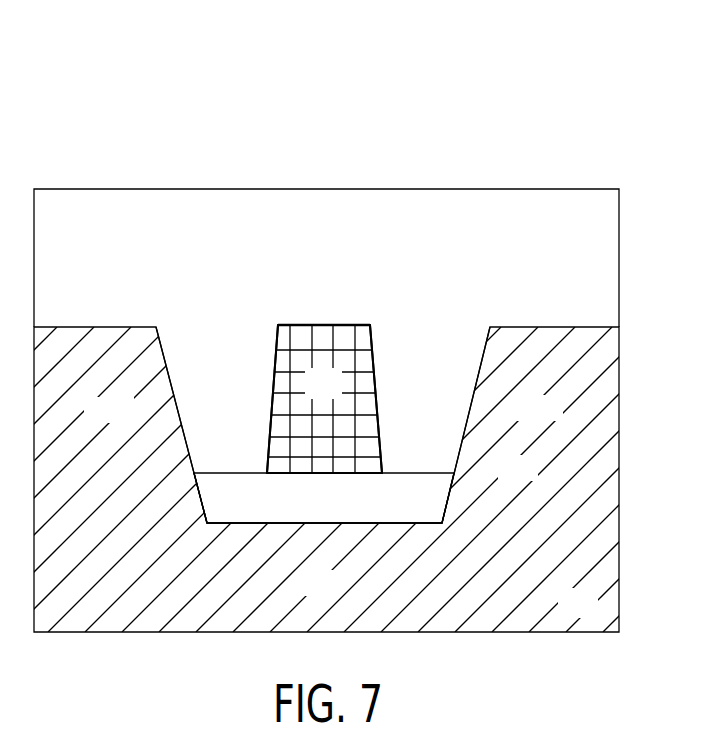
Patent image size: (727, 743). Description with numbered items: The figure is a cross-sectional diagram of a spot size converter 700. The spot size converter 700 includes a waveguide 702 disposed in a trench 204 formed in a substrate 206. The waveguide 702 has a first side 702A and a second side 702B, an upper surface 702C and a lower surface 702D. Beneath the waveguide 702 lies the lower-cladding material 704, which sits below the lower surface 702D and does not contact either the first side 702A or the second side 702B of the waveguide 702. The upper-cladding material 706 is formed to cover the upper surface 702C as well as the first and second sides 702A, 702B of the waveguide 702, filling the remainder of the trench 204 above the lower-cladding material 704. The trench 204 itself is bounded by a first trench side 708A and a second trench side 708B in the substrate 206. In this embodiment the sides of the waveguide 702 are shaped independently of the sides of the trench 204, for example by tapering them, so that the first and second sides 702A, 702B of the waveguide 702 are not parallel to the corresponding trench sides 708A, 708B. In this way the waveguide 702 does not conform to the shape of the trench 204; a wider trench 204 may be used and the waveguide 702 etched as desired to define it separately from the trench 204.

The spot size converter 700 is at (637, 100).
The upper-cladding material 706 is at (333, 261).
The substrate 206 is at (592, 614).
The first trench side 708A is at (169, 394).
The second trench side 708B is at (473, 390).
The trench 204 is at (458, 450).
The lower-cladding material 704 is at (338, 508).
The waveguide 702 is at (339, 396).
The first side of waveguide 702A is at (279, 333).
The second side of waveguide 702B is at (372, 333).
The upper surface of waveguide 702C is at (292, 325).
The lower surface of waveguide 702D is at (360, 471).